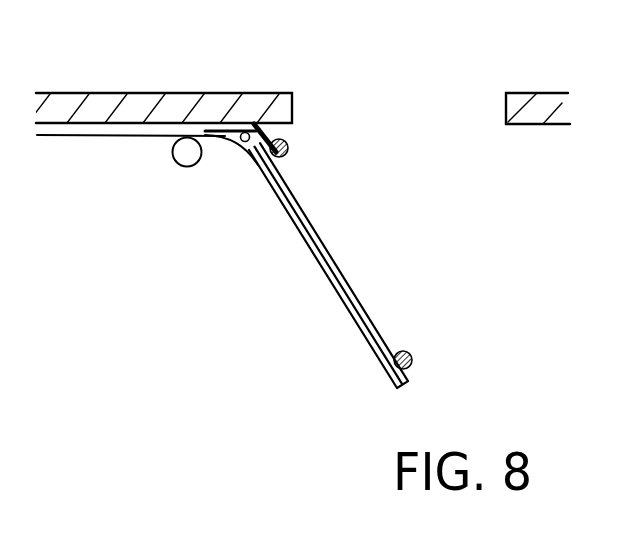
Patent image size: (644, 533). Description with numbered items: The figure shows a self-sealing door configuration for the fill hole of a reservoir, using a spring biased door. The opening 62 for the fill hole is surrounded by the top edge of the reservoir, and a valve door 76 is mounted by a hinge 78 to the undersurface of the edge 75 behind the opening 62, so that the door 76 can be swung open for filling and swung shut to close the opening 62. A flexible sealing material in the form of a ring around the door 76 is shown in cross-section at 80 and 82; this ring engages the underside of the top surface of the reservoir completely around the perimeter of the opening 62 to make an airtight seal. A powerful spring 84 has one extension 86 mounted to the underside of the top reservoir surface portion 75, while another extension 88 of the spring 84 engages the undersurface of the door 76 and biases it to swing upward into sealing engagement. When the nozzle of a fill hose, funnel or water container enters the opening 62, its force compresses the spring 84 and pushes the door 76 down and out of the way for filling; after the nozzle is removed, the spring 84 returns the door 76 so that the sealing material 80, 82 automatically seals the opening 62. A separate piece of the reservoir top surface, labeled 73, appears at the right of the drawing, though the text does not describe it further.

The opening 62 is at (387, 93).
The frame member 73 is at (536, 93).
The edge 75 is at (268, 93).
The valve door 76 is at (338, 252).
The hinge 78 is at (226, 134).
The flexible sealing material 80 is at (288, 143).
The flexible sealing material 82 is at (411, 354).
The spring 84 is at (177, 164).
The extension 86 is at (127, 137).
The extension 88 is at (236, 143).